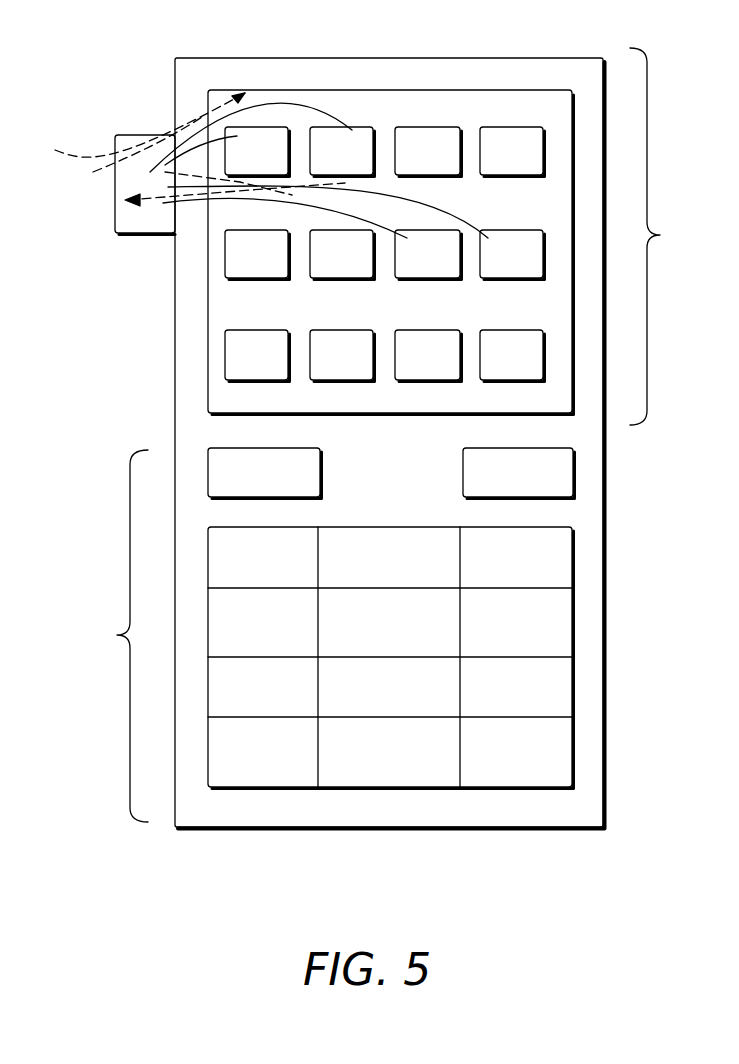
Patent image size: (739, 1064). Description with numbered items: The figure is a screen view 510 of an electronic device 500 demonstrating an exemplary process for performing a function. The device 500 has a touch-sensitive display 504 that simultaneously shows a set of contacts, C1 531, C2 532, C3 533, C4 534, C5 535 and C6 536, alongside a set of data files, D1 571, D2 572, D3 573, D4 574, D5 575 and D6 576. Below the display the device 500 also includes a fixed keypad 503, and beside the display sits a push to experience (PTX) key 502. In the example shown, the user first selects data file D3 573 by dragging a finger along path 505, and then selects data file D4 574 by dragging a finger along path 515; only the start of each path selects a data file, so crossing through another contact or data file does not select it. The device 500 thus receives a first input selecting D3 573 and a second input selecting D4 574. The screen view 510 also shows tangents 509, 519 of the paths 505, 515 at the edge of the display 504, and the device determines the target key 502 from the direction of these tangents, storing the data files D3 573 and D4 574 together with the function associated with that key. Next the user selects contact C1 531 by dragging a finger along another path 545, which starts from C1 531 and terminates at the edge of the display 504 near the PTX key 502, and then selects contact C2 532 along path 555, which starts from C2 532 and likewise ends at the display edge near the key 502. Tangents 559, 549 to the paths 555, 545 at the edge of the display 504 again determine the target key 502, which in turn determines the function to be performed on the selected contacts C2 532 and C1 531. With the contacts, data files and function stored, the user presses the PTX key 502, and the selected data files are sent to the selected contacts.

The electronic device 500 is at (598, 905).
The push to experience (PTX) key 502 is at (148, 234).
The fixed keypad 503 is at (117, 635).
The touch-sensitive display 504 is at (373, 90).
The path 505 is at (306, 198).
The tangent 509 is at (72, 156).
The screen view 510 is at (670, 236).
The path 515 is at (461, 208).
The tangent 519 is at (101, 206).
The contact C1 531 is at (270, 127).
The contact C2 532 is at (358, 127).
The contact C3 533 is at (270, 279).
The contact C4 534 is at (355, 279).
The contact C5 535 is at (270, 381).
The contact C6 536 is at (355, 381).
The path 545 is at (210, 113).
The tangent 549 is at (165, 140).
The path 555 is at (349, 128).
The tangent 559 is at (224, 102).
The data file D1 571 is at (430, 127).
The data file D2 572 is at (508, 127).
The data file D3 573 is at (440, 279).
The data file D4 574 is at (508, 230).
The data file D5 575 is at (440, 381).
The data file D6 576 is at (508, 330).